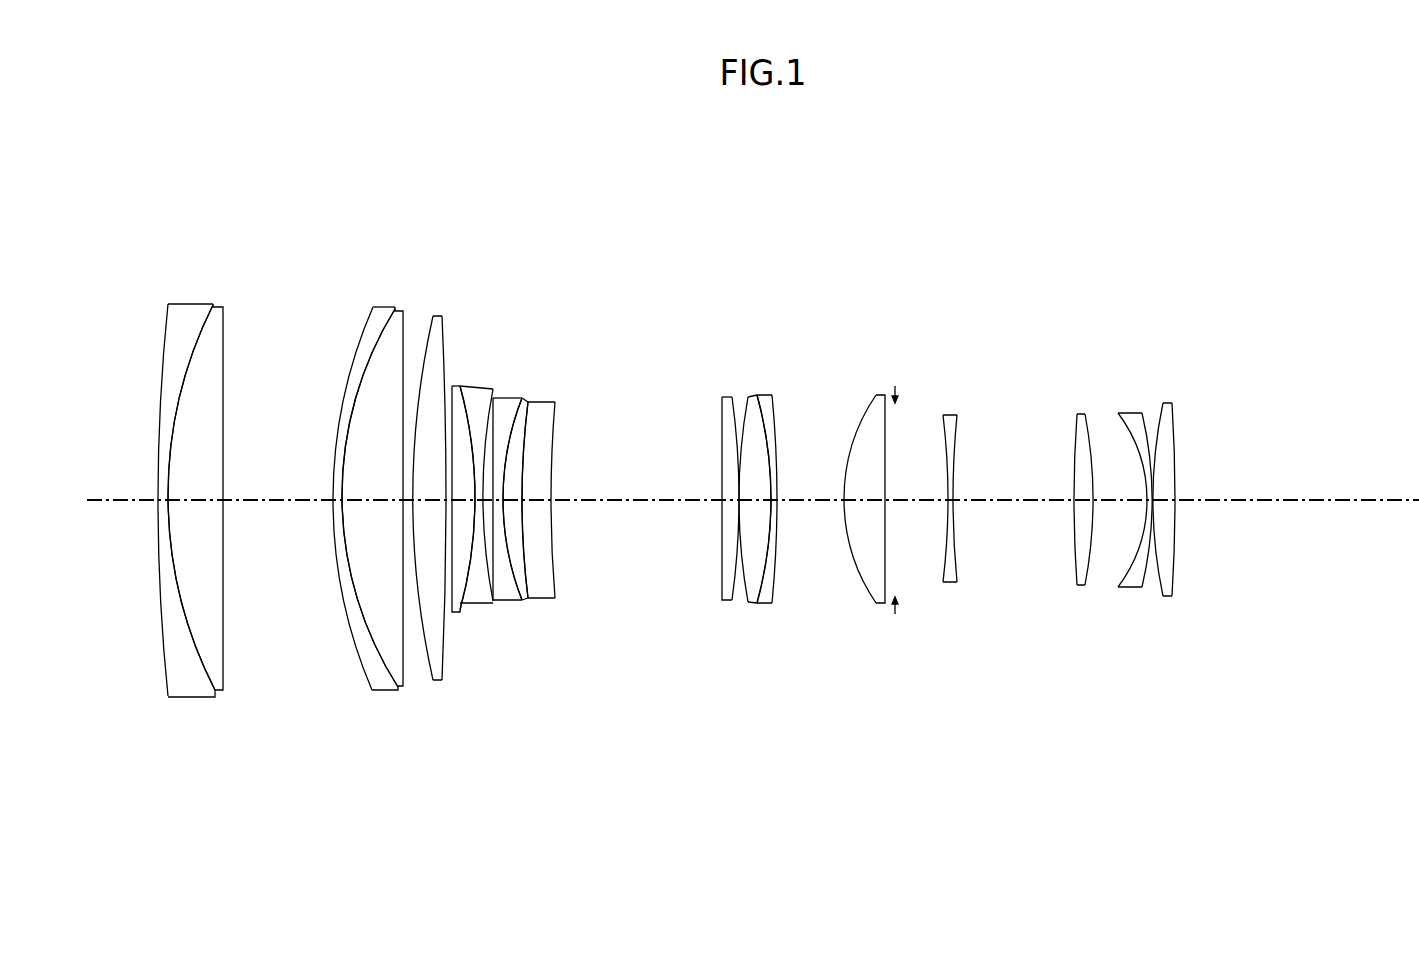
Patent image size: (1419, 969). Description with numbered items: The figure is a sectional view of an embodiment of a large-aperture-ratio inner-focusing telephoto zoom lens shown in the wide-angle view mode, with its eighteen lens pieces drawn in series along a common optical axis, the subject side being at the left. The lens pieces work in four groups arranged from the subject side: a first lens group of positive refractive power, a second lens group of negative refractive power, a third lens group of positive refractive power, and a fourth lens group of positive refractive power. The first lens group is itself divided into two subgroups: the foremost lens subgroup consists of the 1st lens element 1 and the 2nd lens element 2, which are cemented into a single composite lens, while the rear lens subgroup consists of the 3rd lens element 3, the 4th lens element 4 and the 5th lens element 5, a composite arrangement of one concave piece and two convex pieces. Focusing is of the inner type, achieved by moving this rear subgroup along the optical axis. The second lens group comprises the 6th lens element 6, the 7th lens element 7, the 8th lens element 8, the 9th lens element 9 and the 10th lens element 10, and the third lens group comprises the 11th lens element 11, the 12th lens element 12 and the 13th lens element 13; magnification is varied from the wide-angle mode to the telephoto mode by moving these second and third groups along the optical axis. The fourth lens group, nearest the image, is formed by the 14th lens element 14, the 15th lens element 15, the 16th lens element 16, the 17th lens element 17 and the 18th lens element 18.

The 1st lens element 1 is at (192, 697).
The 2nd lens element 2 is at (218, 690).
The 3rd lens element 3 is at (382, 690).
The 4th lens element 4 is at (398, 686).
The 5th lens element 5 is at (437, 680).
The 6th lens element 6 is at (455, 612).
The 7th lens element 7 is at (478, 603).
The 8th lens element 8 is at (505, 600).
The 9th lens element 9 is at (523, 598).
The 10th lens element 10 is at (545, 598).
The 11th lens element 11 is at (723, 600).
The 12th lens element 12 is at (750, 603).
The 13th lens element 13 is at (767, 603).
The 14th lens element 14 is at (875, 603).
The 15th lens element 15 is at (952, 582).
The 16th lens element 16 is at (1082, 585).
The 17th lens element 17 is at (1132, 587).
The 18th lens element 18 is at (1168, 596).